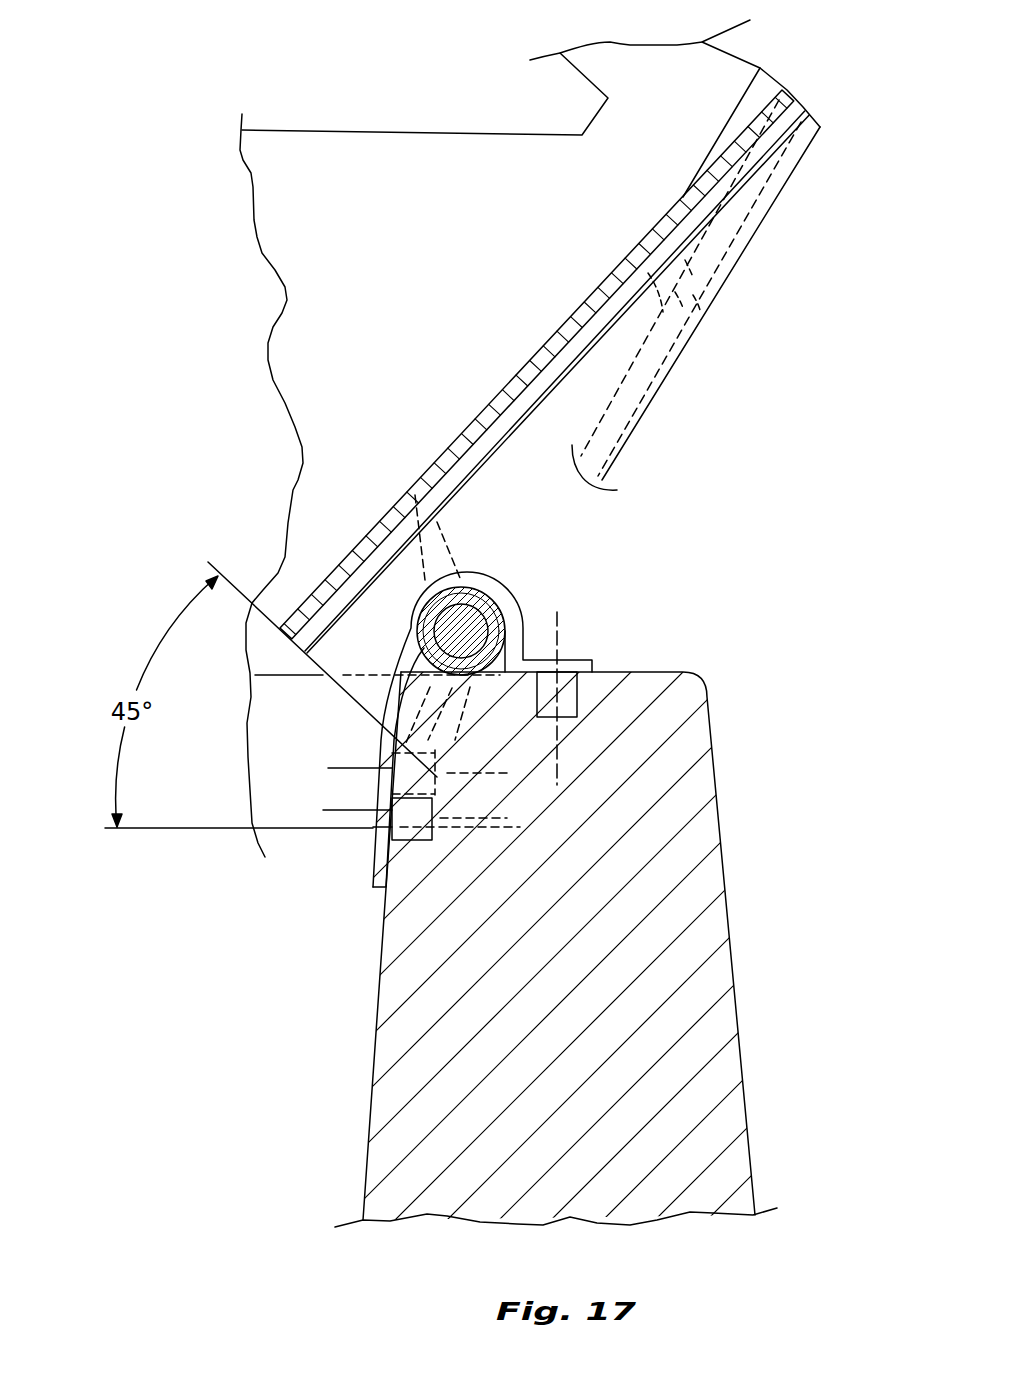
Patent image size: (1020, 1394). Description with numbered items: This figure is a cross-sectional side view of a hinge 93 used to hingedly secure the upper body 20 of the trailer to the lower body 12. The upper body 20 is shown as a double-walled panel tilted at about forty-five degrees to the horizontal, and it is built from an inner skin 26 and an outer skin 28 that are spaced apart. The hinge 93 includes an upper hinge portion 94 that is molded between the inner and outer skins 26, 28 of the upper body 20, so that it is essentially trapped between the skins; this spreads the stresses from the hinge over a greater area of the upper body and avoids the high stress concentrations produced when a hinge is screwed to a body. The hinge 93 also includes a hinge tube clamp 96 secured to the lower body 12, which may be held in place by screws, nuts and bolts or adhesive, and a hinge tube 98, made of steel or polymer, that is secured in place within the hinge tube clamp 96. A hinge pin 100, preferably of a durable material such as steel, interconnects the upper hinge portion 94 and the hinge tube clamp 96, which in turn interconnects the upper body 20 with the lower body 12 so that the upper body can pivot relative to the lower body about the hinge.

The upper body 20 is at (208, 283).
The inner skin 26 is at (593, 297).
The outer skin 28 is at (590, 347).
The upper hinge portion 94 is at (410, 487).
The hinge 93 is at (413, 588).
The hinge tube 98 is at (501, 580).
The lower body 12 is at (388, 1093).
The hinge tube clamp 96 is at (572, 657).
The hinge pin 100 is at (433, 673).